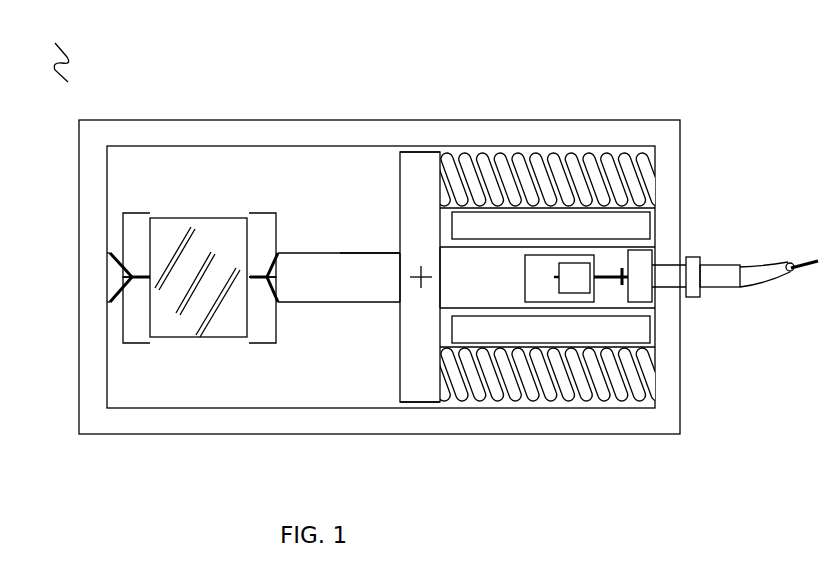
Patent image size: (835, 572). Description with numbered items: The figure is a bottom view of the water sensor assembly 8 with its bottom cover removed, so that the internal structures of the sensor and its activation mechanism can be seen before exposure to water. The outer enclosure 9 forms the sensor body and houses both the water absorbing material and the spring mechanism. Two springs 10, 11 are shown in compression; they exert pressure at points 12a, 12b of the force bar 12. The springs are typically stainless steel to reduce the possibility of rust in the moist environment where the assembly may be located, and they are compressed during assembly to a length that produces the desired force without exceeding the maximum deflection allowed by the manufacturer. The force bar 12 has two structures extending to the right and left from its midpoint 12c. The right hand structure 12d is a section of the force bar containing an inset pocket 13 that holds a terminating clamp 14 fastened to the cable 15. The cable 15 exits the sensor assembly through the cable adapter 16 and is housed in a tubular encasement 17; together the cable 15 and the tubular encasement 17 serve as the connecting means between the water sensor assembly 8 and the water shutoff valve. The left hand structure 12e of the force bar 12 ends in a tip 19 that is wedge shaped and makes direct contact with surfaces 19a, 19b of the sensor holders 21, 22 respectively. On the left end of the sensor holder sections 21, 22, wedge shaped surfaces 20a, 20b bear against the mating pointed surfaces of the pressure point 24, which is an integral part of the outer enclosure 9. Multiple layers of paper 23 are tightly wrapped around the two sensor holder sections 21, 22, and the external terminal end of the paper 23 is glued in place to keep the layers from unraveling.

The water sensor assembly 8 is at (53, 51).
The outer enclosure 9 is at (206, 128).
The spring 10 is at (513, 162).
The spring 11 is at (547, 393).
The force bar 12 is at (402, 277).
The pressure point of force bar 12a is at (420, 170).
The pressure point of force bar 12b is at (423, 378).
The midpoint of force bar 12c is at (418, 279).
The right hand structure of force bar 12d is at (470, 280).
The left hand structure of force bar 12e is at (340, 248).
The inset pocket 13 is at (536, 280).
The terminating clamp 14 is at (578, 270).
The cable 15 is at (603, 280).
The cable adapter 16 is at (694, 290).
The tubular encasement 17 is at (758, 270).
The tip 19 is at (273, 274).
The surface of sensor holder 19a is at (270, 258).
The surface of sensor holder 19b is at (270, 292).
The wedge shaped surface 20a is at (129, 258).
The wedge shaped surface 20b is at (131, 303).
The sensor holder 21 is at (135, 224).
The sensor holder 22 is at (140, 328).
The paper 23 is at (180, 234).
The pressure point 24 is at (117, 273).